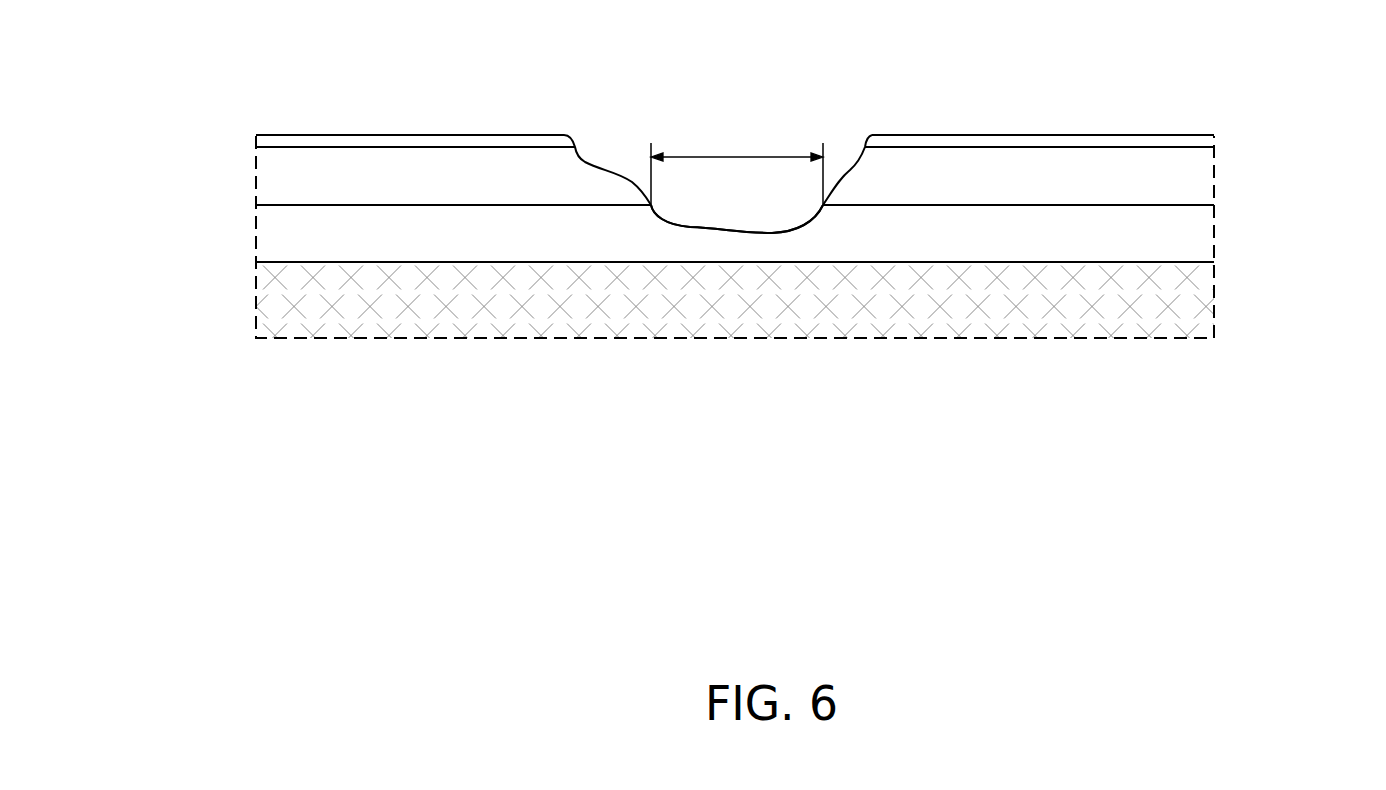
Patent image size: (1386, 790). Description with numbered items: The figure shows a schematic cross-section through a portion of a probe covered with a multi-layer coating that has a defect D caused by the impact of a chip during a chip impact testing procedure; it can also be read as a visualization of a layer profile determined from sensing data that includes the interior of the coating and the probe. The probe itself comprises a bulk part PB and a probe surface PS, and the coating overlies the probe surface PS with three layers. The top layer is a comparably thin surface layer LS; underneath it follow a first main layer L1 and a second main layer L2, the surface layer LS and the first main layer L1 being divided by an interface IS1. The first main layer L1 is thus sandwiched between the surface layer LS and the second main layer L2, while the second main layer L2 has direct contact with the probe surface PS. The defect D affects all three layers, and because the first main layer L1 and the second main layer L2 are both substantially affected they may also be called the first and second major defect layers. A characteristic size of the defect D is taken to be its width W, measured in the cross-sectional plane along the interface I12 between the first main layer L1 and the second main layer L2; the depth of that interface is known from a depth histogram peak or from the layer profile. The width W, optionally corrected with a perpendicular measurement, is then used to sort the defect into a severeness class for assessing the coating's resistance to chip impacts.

The interface IS1 is at (256, 148).
The interface I12 is at (256, 205).
The probe surface PS is at (256, 262).
The bulk part PB is at (1213, 312).
The surface layer LS is at (1214, 142).
The first main layer L1 is at (1193, 178).
The second main layer L2 is at (1200, 230).
The defect D is at (618, 142).
The width W is at (743, 157).